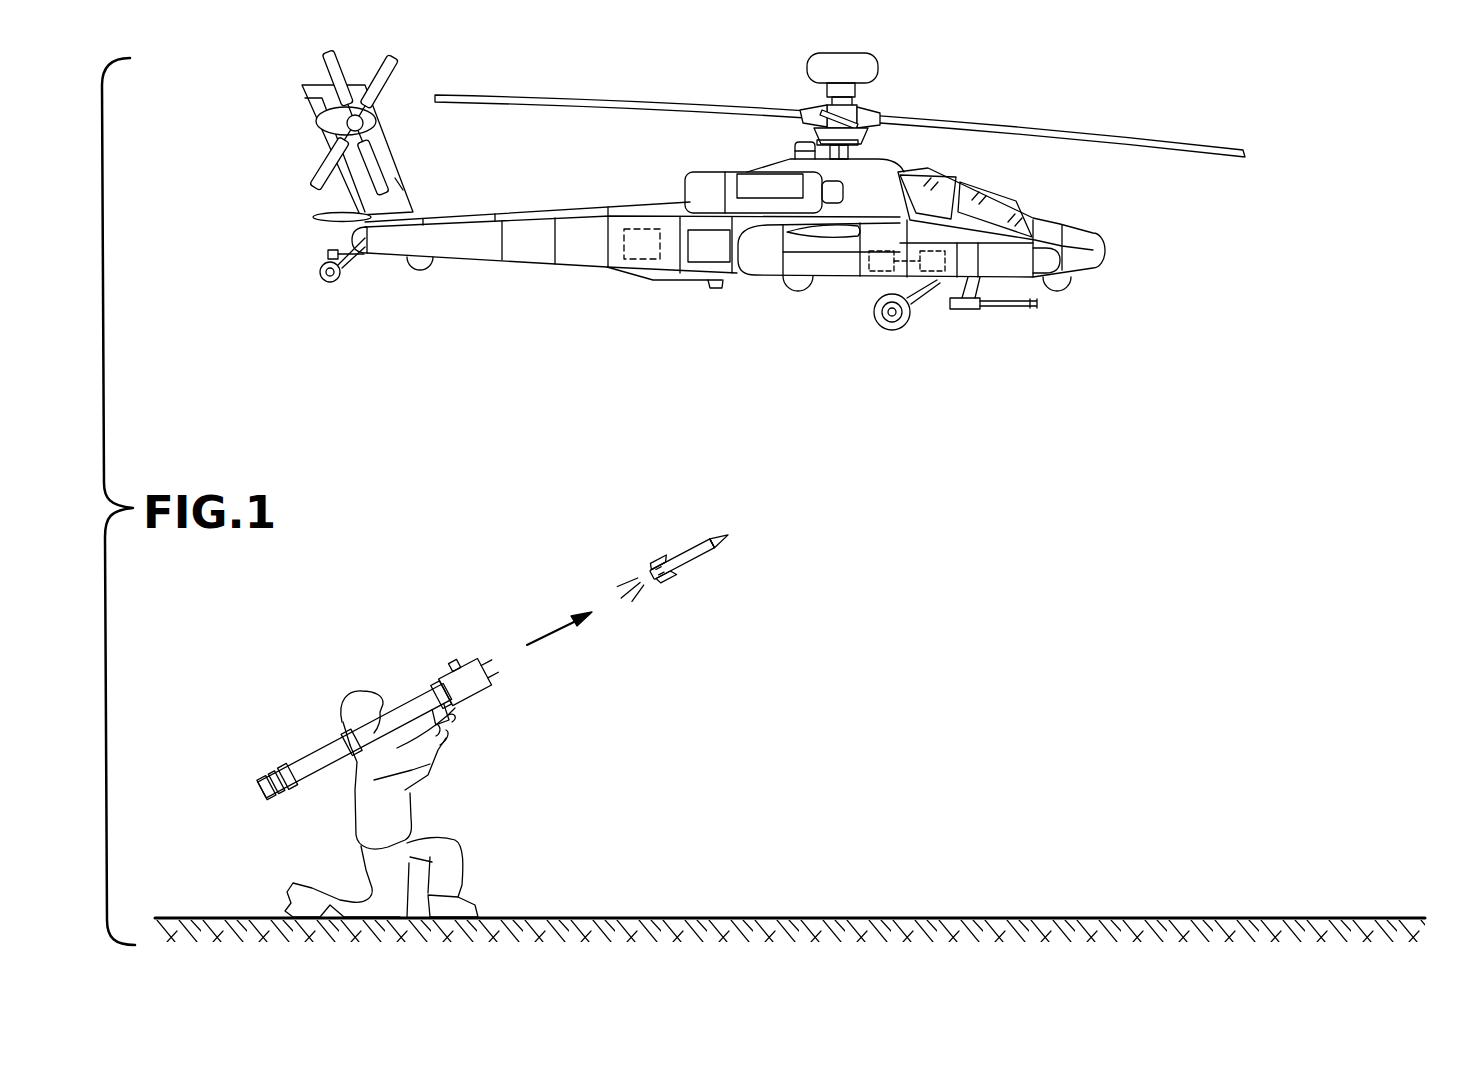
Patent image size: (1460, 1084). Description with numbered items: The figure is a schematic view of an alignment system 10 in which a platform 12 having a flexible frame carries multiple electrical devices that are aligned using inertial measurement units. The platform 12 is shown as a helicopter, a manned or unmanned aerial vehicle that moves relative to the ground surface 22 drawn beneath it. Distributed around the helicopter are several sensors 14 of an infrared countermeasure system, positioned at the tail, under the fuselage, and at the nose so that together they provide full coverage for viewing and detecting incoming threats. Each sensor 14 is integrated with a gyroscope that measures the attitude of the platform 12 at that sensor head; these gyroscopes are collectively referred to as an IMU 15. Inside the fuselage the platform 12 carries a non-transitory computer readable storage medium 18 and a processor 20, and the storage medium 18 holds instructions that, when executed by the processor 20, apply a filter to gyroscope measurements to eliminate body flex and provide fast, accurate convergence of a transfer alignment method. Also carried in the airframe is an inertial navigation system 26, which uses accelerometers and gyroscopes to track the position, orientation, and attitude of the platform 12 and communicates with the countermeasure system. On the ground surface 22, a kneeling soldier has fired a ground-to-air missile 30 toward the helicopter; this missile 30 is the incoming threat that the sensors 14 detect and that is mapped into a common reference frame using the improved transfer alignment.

The alignment system 10 is at (814, 237).
The platform 12 is at (1080, 210).
The sensor 14 is at (726, 308).
The IMU 15 is at (342, 233).
The non-transitory computer readable storage medium 18 is at (938, 270).
The processor 20 is at (873, 270).
The ground surface 22 is at (1087, 905).
The inertial navigation system 26 is at (640, 260).
The missile 30 is at (685, 552).